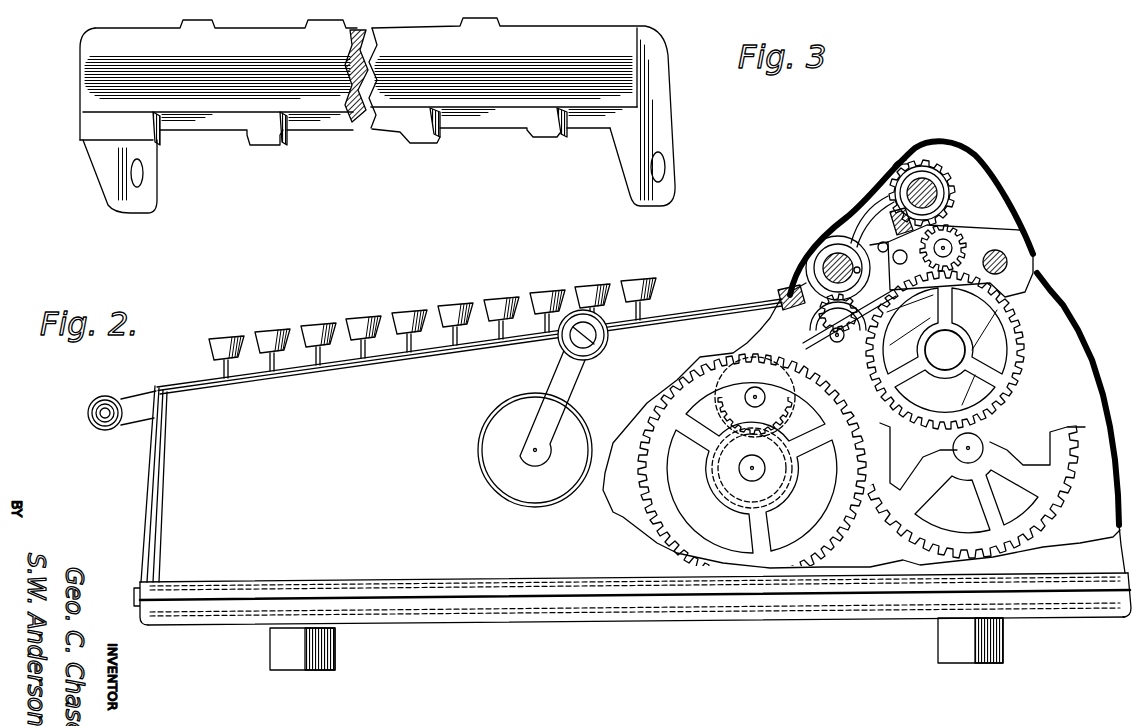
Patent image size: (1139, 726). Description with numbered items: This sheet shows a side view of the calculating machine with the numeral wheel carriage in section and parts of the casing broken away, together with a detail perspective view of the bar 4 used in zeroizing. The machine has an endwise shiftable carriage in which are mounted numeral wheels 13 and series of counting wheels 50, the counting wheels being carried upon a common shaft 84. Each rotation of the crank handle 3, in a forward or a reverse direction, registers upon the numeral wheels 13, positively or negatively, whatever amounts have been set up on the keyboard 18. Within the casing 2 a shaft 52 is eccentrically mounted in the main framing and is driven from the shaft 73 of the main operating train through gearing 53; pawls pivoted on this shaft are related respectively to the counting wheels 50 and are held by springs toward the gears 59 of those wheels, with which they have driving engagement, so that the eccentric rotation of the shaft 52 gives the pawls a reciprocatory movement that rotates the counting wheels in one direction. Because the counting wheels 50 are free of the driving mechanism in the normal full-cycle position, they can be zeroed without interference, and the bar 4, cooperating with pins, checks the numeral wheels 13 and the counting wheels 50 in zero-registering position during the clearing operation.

In FIG. 2, the frame casing 2 is at (992, 180).
In FIG. 2, the crank handle 3 is at (588, 356).
In FIG. 3, the bar 4 is at (490, 118).
In FIG. 2, the bar 4 is at (877, 205).
In FIG. 2, the numeral wheels 13 is at (823, 243).
In FIG. 2, the keyboard 18 is at (647, 308).
In FIG. 2, the counting wheels 50 is at (900, 165).
In FIG. 2, the shaft 52 is at (950, 248).
In FIG. 2, the gearing 53 is at (950, 448).
In FIG. 2, the gears 59 is at (930, 163).
In FIG. 2, the shaft of the main operating train 73 is at (975, 445).
In FIG. 2, the common shaft 84 is at (943, 200).